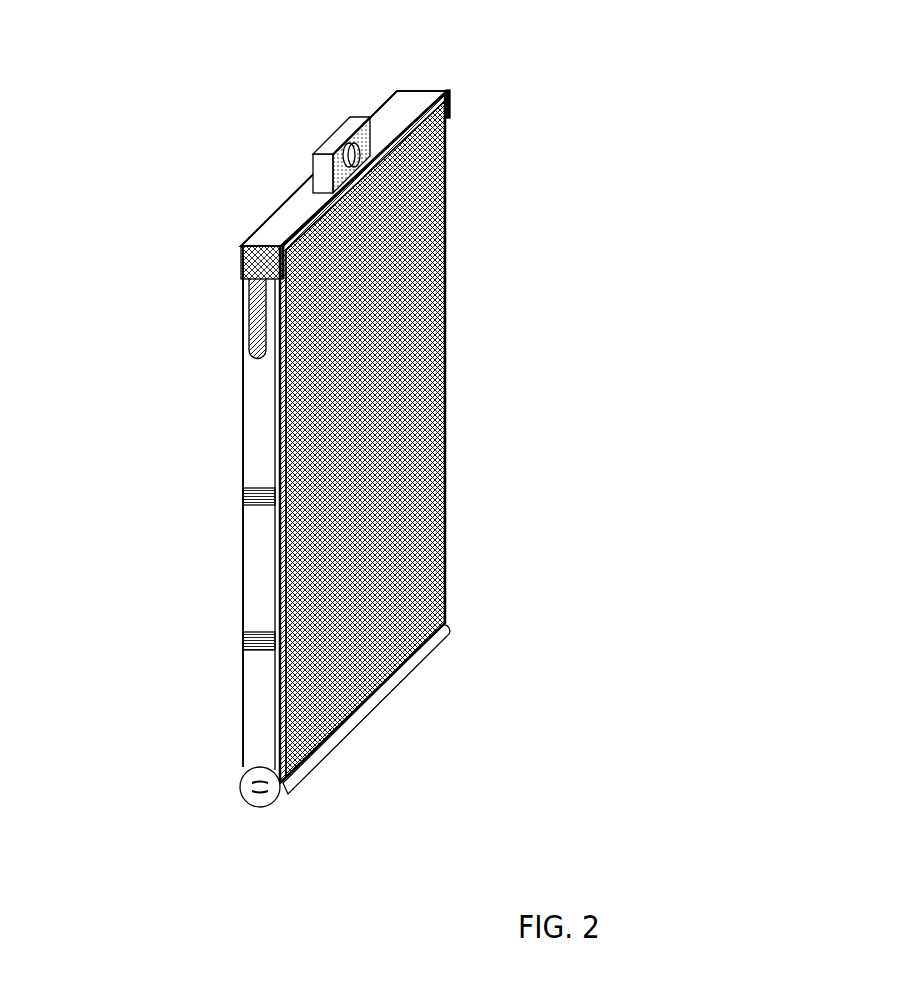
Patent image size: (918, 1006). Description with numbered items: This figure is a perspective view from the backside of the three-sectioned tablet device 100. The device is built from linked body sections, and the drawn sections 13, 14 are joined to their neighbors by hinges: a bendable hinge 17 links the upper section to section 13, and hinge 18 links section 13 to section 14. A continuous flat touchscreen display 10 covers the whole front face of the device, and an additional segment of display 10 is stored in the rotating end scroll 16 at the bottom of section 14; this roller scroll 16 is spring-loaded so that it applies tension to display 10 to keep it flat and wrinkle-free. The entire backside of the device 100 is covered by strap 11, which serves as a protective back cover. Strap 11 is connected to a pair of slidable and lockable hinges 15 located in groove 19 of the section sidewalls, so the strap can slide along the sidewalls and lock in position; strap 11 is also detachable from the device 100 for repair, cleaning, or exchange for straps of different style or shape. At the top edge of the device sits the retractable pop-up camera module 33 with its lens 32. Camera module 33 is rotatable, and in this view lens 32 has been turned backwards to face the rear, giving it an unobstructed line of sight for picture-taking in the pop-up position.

The sectioned tablet device 100 is at (138, 66).
The touchscreen display 10 is at (243, 405).
The strap 11 is at (436, 280).
The section 13 is at (243, 557).
The section 14 is at (243, 733).
The sliding and lockable hinge 15 is at (243, 268).
The rotating end scroll 16 is at (283, 788).
The bendable hinge 17 is at (243, 500).
The hinge 18 is at (243, 642).
The groove 19 is at (250, 310).
The lens 32 is at (373, 160).
The pop-up camera module 33 is at (332, 138).